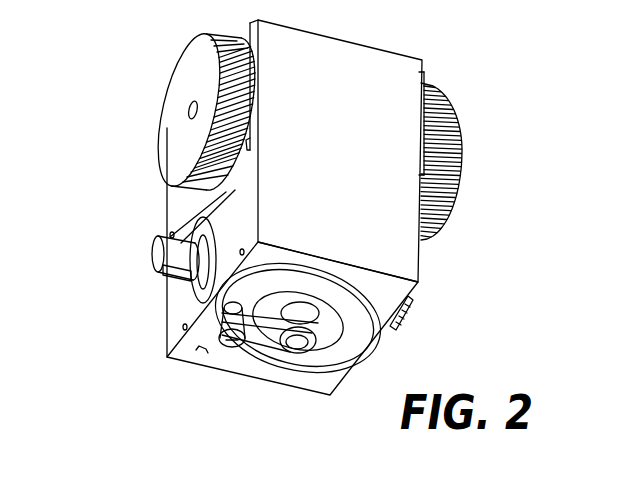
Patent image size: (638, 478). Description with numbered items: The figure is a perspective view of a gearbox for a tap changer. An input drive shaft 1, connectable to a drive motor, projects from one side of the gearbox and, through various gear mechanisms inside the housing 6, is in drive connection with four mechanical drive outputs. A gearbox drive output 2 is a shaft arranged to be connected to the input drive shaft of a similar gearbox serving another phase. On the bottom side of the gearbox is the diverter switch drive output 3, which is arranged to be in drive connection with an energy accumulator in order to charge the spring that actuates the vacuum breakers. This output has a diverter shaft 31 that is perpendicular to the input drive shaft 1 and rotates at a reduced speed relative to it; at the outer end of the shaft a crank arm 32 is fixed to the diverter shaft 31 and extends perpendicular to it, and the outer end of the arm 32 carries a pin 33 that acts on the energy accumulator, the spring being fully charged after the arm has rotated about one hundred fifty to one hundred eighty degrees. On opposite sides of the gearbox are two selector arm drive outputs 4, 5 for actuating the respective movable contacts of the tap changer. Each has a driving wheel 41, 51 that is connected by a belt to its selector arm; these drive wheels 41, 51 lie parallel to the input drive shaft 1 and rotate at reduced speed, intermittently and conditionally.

The input drive shaft 1 is at (168, 250).
The gearbox drive output 2 is at (405, 304).
The diverter switch drive output 3 is at (239, 397).
The selector arm drive output 4 is at (171, 113).
The driving wheel 41 is at (179, 162).
The selector arm drive output 5 is at (480, 151).
The driving wheel 51 is at (457, 173).
The housing 6 is at (347, 57).
The diverter shaft 31 is at (321, 314).
The crank arm 32 is at (273, 338).
The pin 33 is at (205, 344).